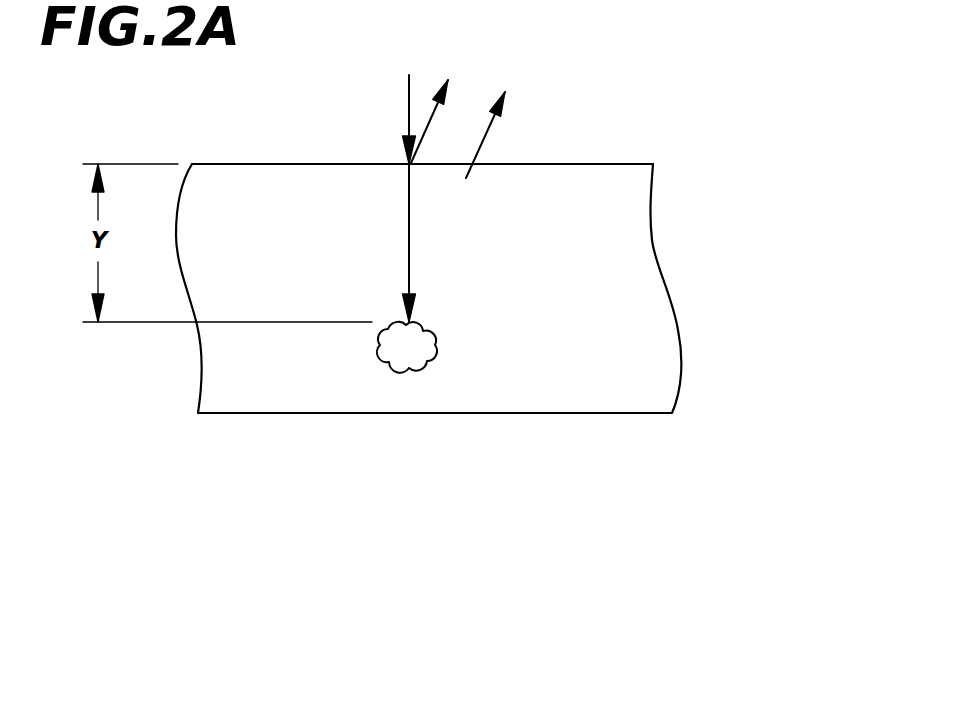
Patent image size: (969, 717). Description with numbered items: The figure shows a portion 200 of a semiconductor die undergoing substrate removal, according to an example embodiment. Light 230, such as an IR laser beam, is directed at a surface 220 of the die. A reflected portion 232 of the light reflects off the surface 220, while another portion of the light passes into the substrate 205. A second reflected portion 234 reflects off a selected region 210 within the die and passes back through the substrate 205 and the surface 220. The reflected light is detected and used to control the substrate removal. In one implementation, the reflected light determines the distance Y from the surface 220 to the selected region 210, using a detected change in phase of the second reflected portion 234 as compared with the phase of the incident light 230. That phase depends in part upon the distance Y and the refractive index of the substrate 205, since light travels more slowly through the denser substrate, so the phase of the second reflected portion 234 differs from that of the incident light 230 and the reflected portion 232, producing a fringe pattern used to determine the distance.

The portion of a semiconductor die 200 is at (700, 287).
The substrate 205 is at (610, 205).
The surface 220 is at (617, 164).
The selected region 210 is at (433, 367).
The light 230 is at (408, 105).
The reflected portion 232 is at (450, 78).
The second reflected portion 234 is at (488, 132).